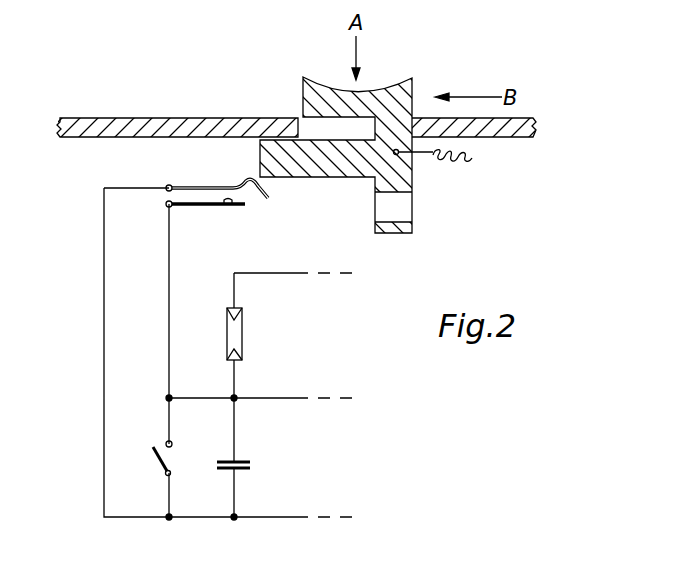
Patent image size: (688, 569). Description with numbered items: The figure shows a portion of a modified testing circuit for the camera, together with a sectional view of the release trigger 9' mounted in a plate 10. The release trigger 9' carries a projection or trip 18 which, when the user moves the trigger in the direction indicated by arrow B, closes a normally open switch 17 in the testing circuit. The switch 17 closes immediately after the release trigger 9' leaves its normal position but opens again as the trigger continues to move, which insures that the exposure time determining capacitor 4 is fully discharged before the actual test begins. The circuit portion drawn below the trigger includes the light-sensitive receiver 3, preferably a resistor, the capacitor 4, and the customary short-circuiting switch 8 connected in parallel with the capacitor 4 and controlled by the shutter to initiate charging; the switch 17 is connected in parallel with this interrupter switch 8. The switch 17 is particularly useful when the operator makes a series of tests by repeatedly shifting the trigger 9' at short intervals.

The base plate 10 is at (156, 115).
The release trigger 9' is at (370, 155).
The projection or trip 18 is at (264, 179).
The normally open switch 17 is at (226, 207).
The light-sensitive receiver 3 is at (242, 336).
The exposure time determining capacitor 4 is at (250, 466).
The short-circuiting switch 8 is at (160, 459).